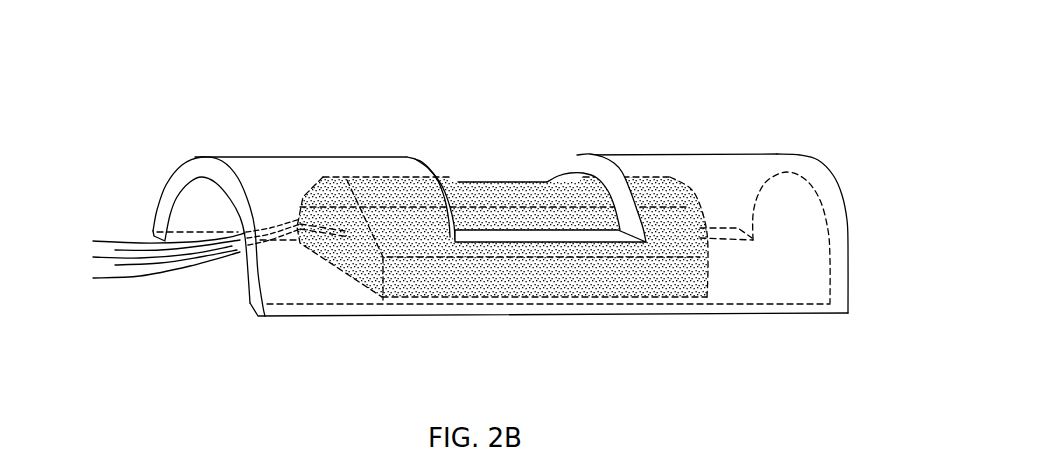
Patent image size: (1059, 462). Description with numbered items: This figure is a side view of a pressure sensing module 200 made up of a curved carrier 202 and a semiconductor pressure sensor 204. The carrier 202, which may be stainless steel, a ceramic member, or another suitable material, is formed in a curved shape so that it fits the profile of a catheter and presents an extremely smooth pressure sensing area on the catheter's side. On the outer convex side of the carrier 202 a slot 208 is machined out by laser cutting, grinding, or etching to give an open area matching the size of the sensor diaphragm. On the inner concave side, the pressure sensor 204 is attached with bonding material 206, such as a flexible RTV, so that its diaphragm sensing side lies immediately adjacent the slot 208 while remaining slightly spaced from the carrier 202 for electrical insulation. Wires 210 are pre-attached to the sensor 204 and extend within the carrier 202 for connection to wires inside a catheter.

The pressure sensing module 200 is at (746, 61).
The carrier 202 is at (500, 215).
The semiconductor pressure sensor 204 is at (502, 266).
The bonding material 206 is at (416, 176).
The slot 208 is at (548, 177).
The wires 210 is at (117, 248).